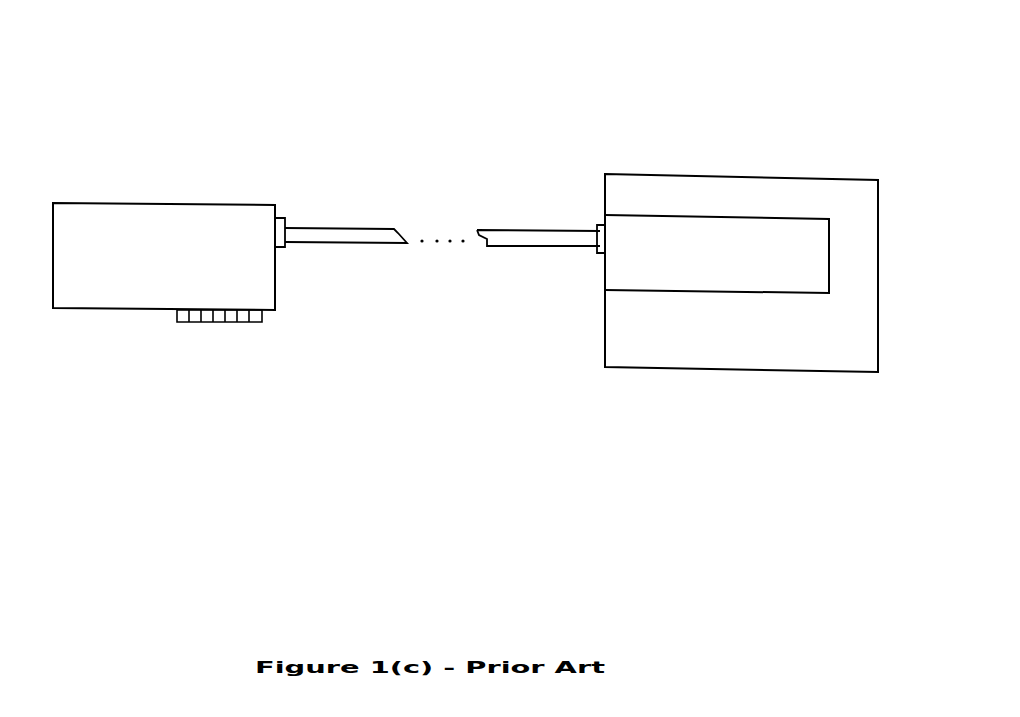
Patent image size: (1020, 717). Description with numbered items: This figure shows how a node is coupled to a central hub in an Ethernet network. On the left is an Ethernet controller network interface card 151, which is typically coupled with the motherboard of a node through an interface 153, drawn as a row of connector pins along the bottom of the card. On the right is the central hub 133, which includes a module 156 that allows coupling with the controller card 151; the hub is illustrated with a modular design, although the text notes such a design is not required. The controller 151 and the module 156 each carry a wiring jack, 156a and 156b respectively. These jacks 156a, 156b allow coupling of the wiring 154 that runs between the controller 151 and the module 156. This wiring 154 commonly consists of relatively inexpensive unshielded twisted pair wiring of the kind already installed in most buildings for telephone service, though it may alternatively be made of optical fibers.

The Ethernet controller network interface card 151 is at (182, 193).
The interface 153 is at (225, 341).
The wiring jack 156a is at (291, 196).
The wiring 154 is at (509, 268).
The wiring jack 156b is at (585, 214).
The central hub 133 is at (766, 163).
The module 156 is at (677, 232).